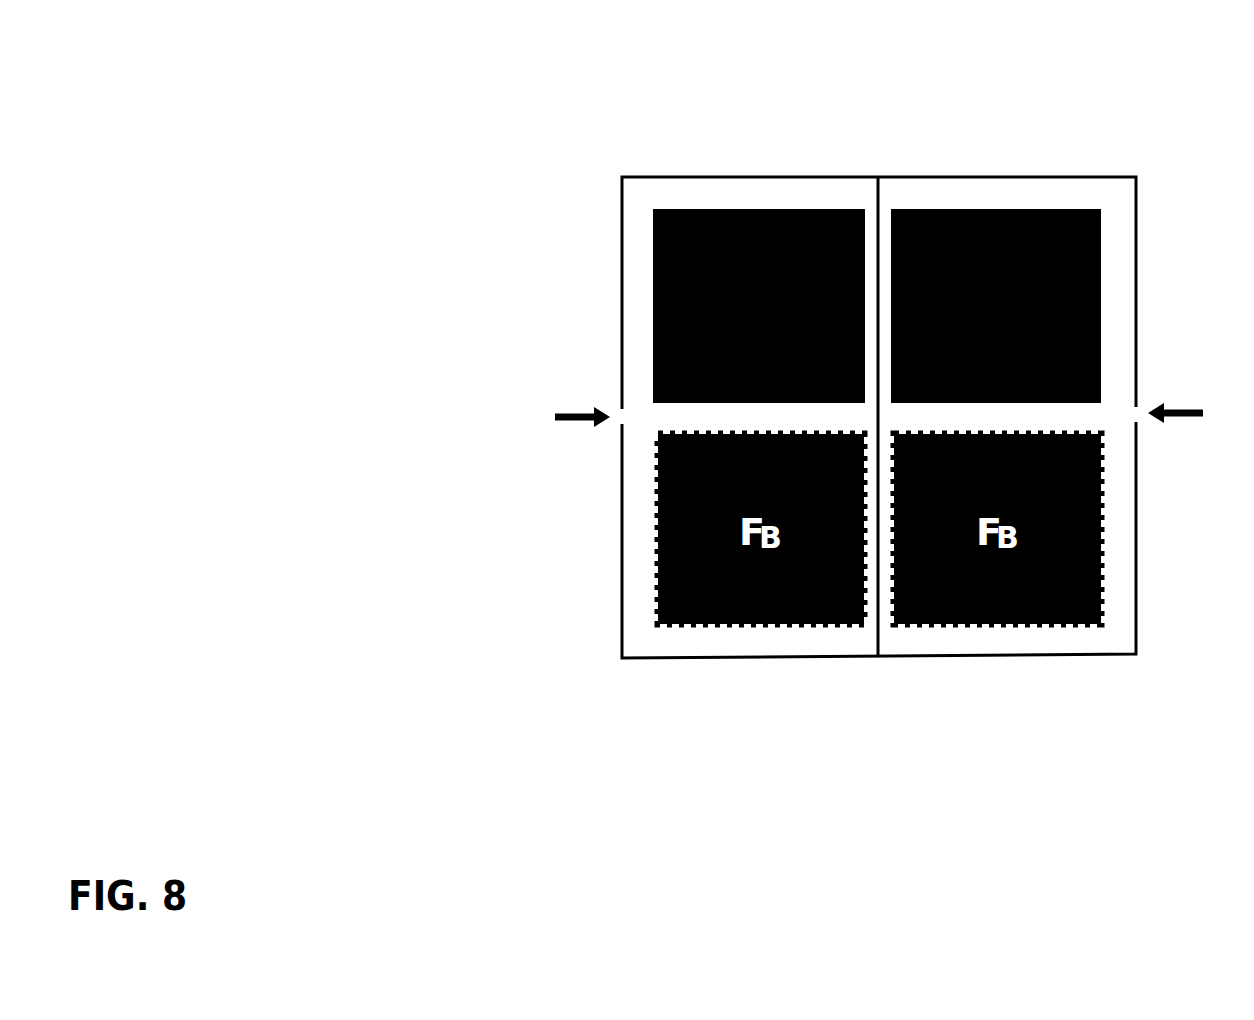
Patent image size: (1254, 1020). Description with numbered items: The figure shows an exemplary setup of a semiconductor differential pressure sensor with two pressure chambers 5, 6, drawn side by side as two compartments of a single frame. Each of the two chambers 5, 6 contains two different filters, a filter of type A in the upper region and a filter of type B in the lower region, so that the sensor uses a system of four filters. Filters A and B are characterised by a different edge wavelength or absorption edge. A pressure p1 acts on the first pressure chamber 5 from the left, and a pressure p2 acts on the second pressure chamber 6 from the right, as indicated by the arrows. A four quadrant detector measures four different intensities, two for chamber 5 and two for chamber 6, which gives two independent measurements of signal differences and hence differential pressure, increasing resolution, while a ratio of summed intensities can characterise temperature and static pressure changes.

The first pressure chamber 5 is at (783, 243).
The second pressure chamber 6 is at (1004, 243).
The pressure acting on first pressure chamber p1 is at (558, 413).
The pressure acting on second pressure chamber p2 is at (1201, 412).